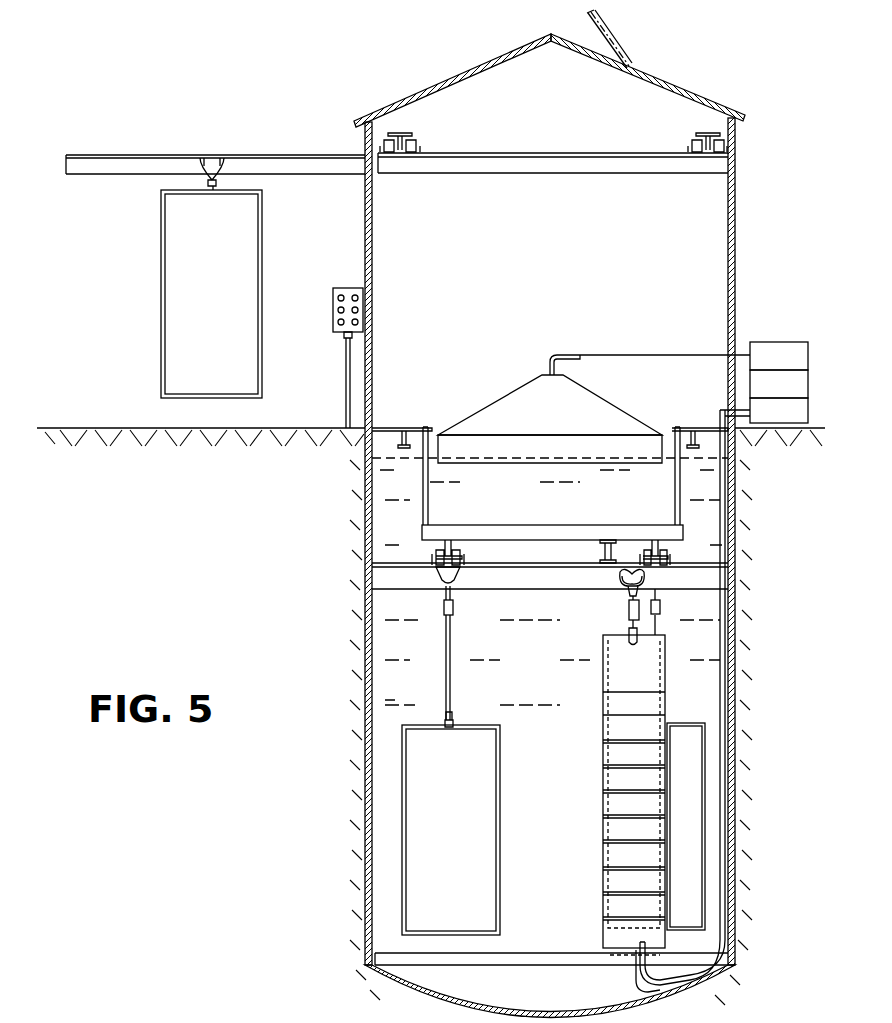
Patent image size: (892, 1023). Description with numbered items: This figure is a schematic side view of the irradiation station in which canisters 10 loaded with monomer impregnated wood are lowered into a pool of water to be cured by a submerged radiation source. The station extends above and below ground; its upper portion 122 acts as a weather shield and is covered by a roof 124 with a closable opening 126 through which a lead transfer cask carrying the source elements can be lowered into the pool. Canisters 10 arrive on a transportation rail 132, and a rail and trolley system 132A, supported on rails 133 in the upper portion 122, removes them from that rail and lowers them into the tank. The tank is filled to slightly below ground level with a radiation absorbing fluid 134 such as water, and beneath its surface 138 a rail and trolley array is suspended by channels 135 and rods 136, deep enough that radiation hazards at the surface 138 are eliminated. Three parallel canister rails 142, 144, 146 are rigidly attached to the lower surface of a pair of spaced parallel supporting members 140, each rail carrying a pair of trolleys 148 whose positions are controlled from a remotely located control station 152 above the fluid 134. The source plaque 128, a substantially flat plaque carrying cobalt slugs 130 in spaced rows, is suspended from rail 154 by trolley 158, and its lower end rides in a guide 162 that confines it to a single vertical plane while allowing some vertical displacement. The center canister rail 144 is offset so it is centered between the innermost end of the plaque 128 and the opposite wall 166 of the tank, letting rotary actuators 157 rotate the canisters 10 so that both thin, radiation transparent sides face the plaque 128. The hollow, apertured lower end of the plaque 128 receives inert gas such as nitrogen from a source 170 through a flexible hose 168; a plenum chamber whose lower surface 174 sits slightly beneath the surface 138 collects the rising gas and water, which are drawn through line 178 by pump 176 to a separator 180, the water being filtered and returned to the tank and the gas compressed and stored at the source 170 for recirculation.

The canister 10 is at (222, 288).
The upper portion 122 is at (366, 215).
The roof 124 is at (442, 81).
The closable opening 126 is at (681, 88).
The source plaque 128 is at (603, 703).
The cobalt-60 slugs 130 is at (605, 765).
The transportation rail 132 is at (134, 155).
The rail and trolley system 132A is at (500, 170).
The rails 133 is at (412, 133).
The radiation absorbing fluid 134 is at (548, 665).
The channels 135 is at (692, 432).
The rods 136 is at (423, 492).
The surface 138 is at (398, 445).
The supporting members 140 is at (528, 525).
The canister rail 142 is at (664, 551).
The center canister rail 144 is at (606, 553).
The canister rail 146 is at (438, 552).
The trolleys 148 is at (436, 567).
The control station 152 is at (333, 296).
The rail 154 is at (561, 582).
The rotary actuators 157 is at (453, 608).
The trolley 158 is at (627, 592).
The guide 162 is at (569, 953).
The wall 166 is at (728, 684).
The flexible hose 168 is at (636, 982).
The source 170 is at (792, 421).
The lower surface 174 is at (528, 463).
The pump 176 is at (792, 394).
The line 178 is at (632, 354).
The separator 180 is at (792, 366).